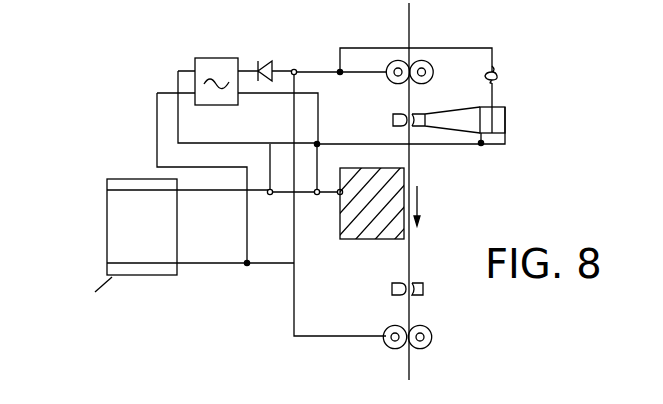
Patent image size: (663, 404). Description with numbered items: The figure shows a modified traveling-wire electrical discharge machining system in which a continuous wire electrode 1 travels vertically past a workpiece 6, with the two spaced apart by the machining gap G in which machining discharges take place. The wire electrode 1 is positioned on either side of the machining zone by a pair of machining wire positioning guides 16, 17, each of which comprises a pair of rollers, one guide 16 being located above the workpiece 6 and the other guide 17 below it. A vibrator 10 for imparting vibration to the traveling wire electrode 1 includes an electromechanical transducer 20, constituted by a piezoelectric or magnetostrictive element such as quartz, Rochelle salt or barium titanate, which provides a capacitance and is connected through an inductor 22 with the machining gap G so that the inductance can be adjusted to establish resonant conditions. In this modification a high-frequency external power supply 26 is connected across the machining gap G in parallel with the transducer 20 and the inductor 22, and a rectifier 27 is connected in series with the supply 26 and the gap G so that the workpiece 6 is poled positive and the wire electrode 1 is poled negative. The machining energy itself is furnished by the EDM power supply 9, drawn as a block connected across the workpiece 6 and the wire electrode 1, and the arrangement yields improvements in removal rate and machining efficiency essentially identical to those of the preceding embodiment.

The traveling wire electrode 1 is at (409, 252).
The workpiece 6 is at (347, 240).
The EDM power supply 9 is at (107, 190).
The vibrator 10 is at (455, 107).
The machining wire positioning guide 16 is at (428, 62).
The machining wire positioning guide 17 is at (432, 335).
The electromechanical transducer 20 is at (505, 120).
The inductor 22 is at (498, 80).
The high-frequency external power supply 26 is at (212, 58).
The rectifier 27 is at (263, 60).
The machining gap G is at (409, 180).